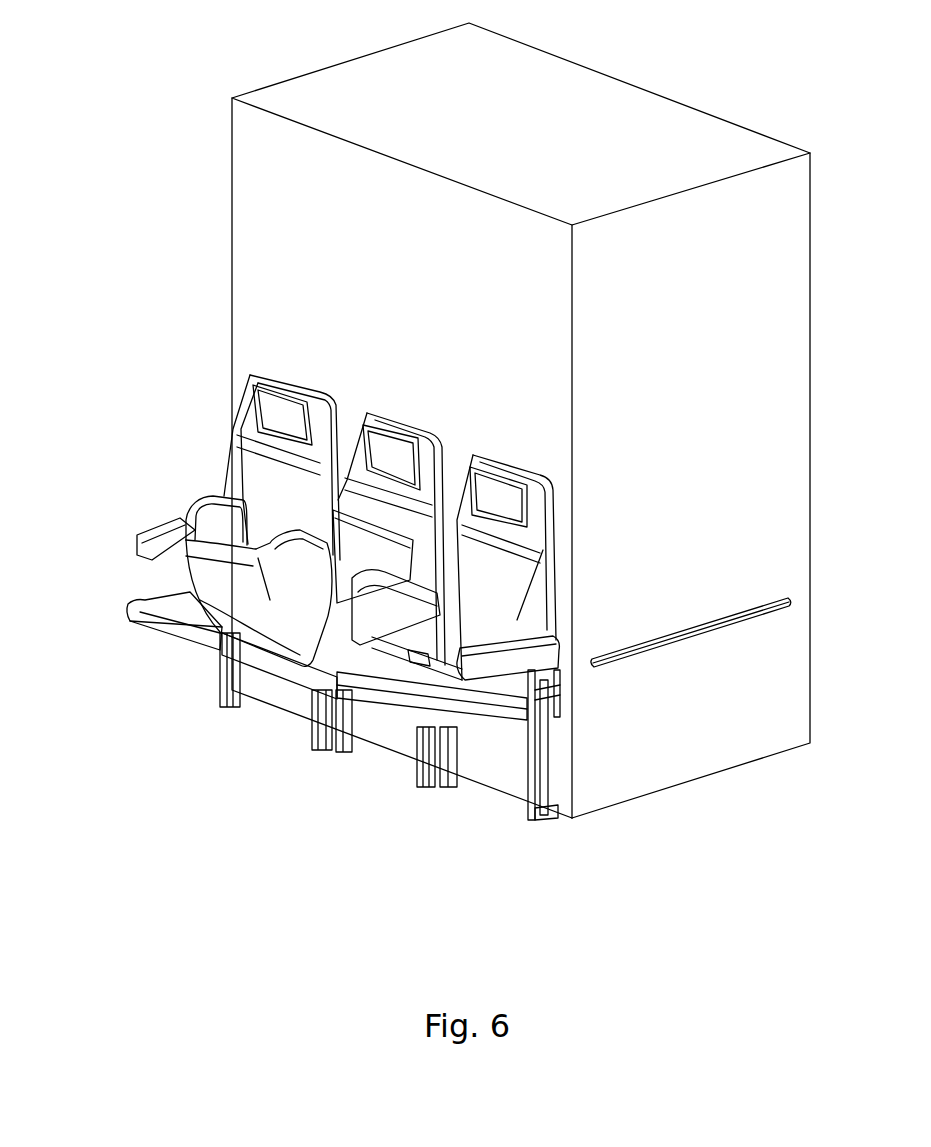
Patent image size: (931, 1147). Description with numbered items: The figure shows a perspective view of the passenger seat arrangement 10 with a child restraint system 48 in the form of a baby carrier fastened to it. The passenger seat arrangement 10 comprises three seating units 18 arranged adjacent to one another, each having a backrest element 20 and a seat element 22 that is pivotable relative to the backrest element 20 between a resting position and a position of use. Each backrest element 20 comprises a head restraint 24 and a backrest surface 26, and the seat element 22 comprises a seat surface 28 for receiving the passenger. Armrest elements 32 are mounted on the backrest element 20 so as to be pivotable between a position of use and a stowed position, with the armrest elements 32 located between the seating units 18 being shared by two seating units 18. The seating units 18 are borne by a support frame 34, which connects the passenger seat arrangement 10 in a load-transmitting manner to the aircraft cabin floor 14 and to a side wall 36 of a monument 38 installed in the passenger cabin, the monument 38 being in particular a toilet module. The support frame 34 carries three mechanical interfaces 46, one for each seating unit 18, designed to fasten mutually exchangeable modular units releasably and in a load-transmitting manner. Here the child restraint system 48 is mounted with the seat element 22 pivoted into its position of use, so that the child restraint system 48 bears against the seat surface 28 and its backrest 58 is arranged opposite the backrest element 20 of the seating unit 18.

The passenger seat arrangement 10 is at (397, 567).
The aircraft cabin floor 14 is at (108, 793).
The seating unit 18 is at (442, 462).
The backrest element 20 is at (558, 524).
The seat element 22 is at (618, 779).
The head restraint 24 is at (507, 490).
The backrest surface 26 is at (518, 595).
The seat surface 28 is at (398, 700).
The armrest element 32 is at (527, 658).
The support frame 34 is at (566, 742).
The side wall 36 is at (257, 176).
The monument 38 is at (268, 72).
The mechanical interface 46 is at (419, 650).
The child restraint system 48 is at (288, 662).
The backrest 58 is at (288, 565).